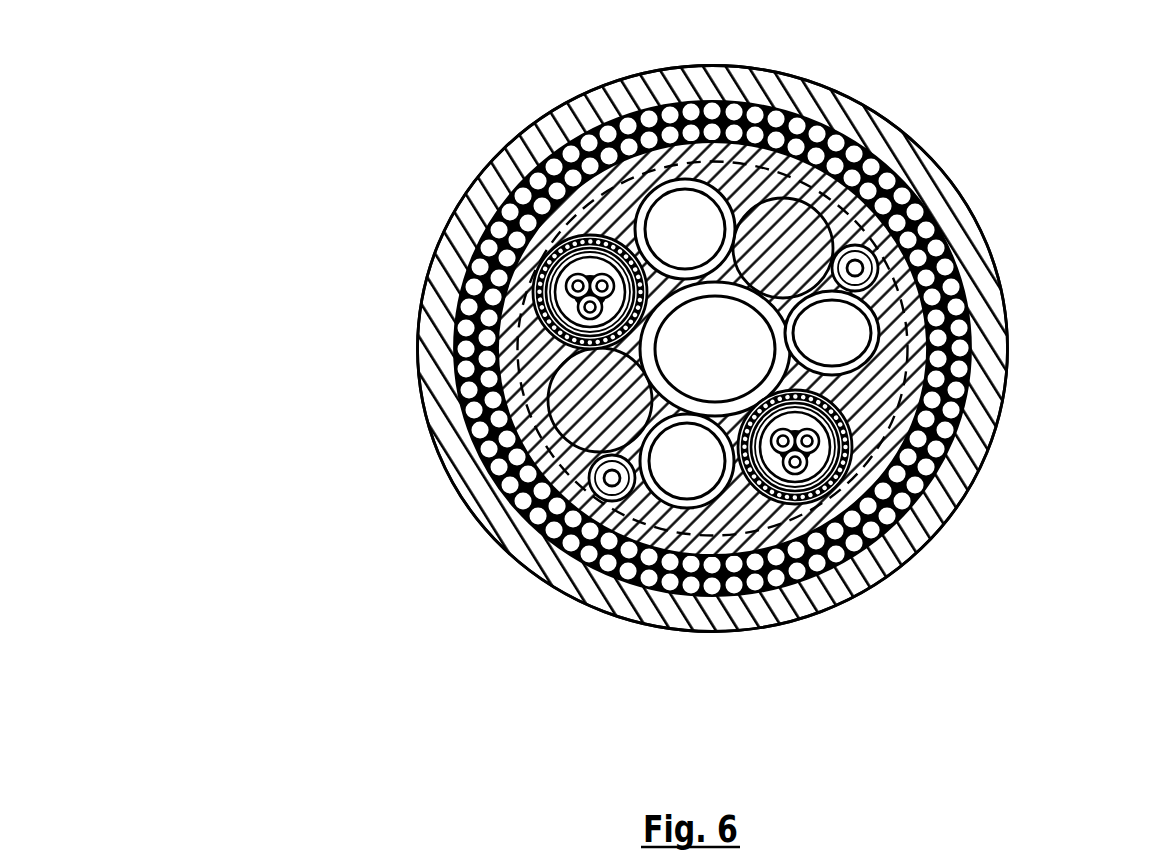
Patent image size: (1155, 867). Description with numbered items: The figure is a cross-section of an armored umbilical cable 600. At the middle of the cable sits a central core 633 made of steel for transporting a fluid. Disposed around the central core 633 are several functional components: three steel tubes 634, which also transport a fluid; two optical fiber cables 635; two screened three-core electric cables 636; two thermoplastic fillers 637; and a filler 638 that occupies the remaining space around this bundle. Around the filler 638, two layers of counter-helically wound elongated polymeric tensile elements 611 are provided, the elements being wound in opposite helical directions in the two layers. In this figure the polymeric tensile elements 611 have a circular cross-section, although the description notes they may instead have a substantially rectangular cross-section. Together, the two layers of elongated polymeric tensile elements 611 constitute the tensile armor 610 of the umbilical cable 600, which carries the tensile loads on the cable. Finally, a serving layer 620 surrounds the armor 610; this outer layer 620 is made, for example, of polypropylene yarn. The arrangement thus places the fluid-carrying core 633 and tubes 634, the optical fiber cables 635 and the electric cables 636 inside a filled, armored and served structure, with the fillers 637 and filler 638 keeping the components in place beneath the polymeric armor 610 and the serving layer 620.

The umbilical cable 600 is at (312, 259).
The tensile armor 610 is at (552, 137).
The elongated polymeric tensile elements 611 is at (553, 413).
The serving layer 620 is at (425, 362).
The central core 633 is at (910, 513).
The steel tubes 634 is at (728, 195).
The optical fiber cables 635 is at (873, 253).
The screened three-core electric cables 636 is at (558, 248).
The thermoplastic fillers 637 is at (583, 421).
The filler 638 is at (900, 266).